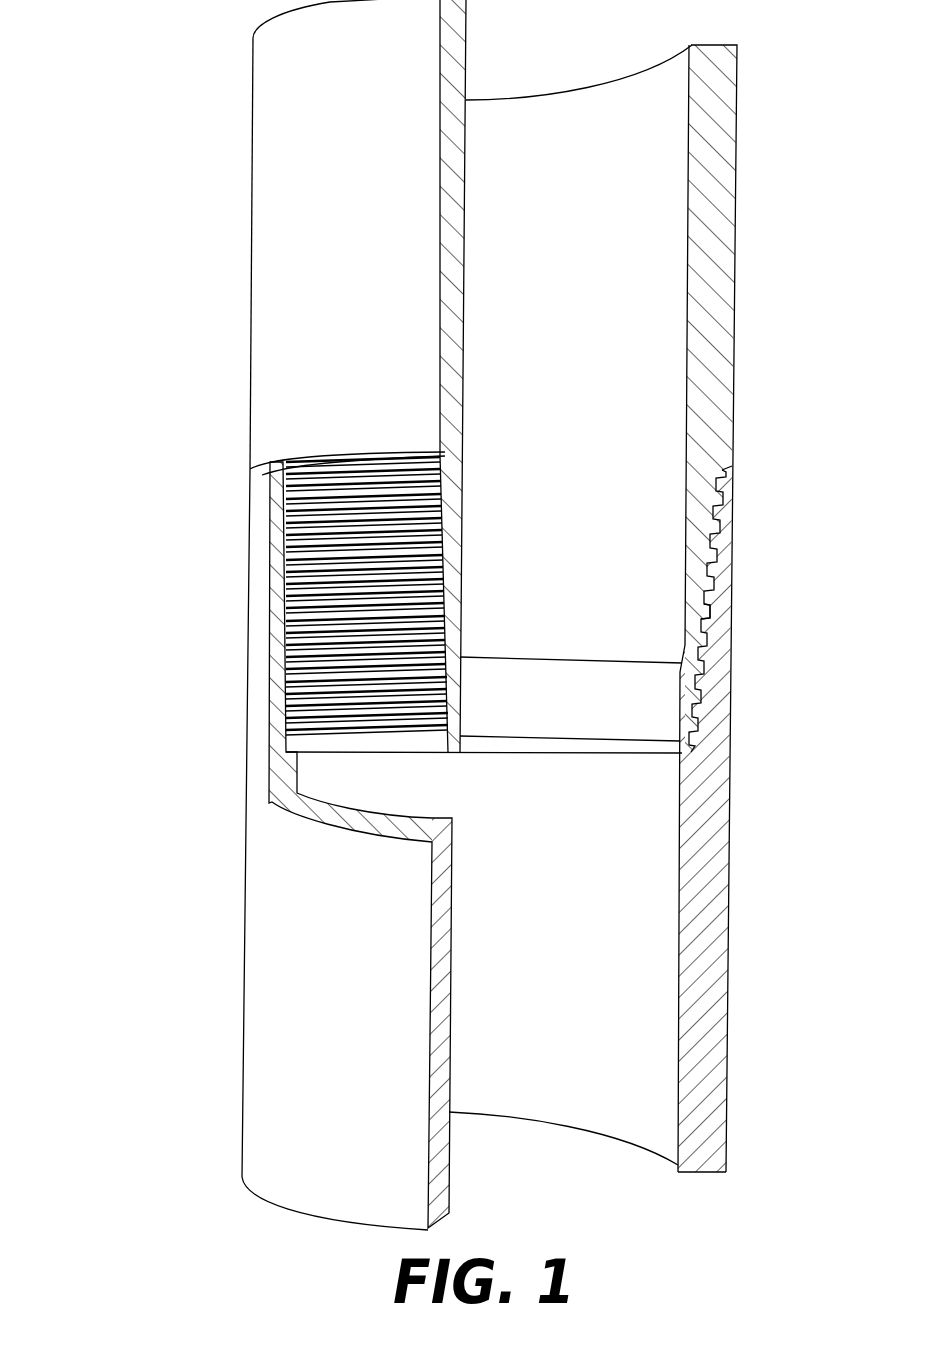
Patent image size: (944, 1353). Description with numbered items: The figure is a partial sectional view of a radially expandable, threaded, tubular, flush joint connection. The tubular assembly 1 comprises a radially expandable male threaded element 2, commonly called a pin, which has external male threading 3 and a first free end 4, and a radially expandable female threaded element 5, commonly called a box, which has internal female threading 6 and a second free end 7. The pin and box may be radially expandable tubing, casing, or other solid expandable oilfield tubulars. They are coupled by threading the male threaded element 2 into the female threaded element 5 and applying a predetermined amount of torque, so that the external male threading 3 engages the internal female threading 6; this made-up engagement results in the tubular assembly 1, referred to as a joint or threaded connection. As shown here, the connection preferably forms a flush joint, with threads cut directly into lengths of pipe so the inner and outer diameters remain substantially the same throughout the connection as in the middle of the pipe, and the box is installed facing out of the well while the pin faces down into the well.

The tubular assembly 1 is at (176, 432).
The male threaded element 2 is at (627, 312).
The external male threading 3 is at (700, 562).
The first free end 4 is at (691, 750).
The female threaded element 5 is at (648, 932).
The internal female threading 6 is at (708, 620).
The second free end 7 is at (725, 474).